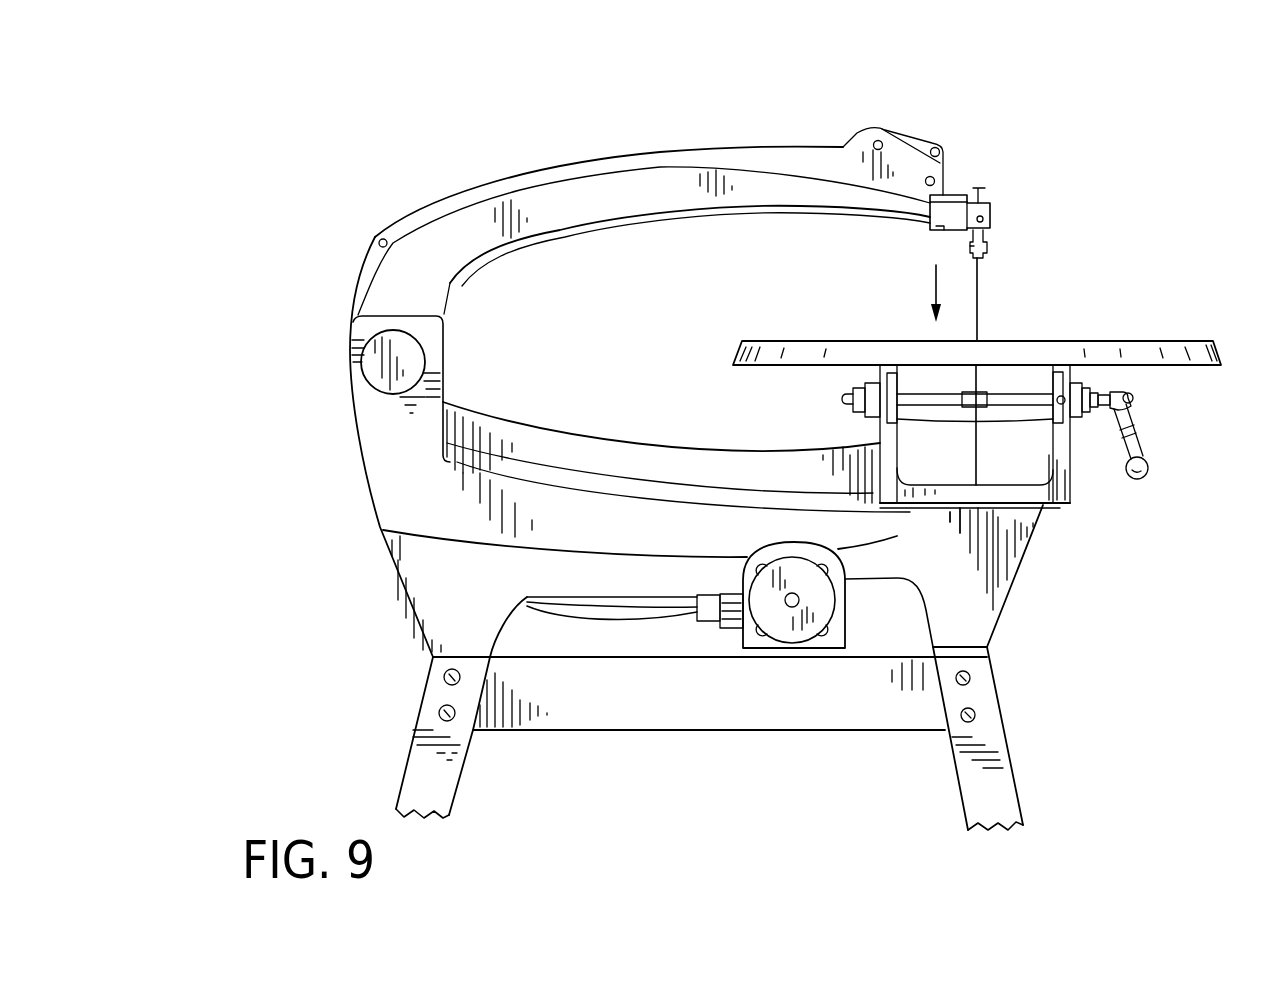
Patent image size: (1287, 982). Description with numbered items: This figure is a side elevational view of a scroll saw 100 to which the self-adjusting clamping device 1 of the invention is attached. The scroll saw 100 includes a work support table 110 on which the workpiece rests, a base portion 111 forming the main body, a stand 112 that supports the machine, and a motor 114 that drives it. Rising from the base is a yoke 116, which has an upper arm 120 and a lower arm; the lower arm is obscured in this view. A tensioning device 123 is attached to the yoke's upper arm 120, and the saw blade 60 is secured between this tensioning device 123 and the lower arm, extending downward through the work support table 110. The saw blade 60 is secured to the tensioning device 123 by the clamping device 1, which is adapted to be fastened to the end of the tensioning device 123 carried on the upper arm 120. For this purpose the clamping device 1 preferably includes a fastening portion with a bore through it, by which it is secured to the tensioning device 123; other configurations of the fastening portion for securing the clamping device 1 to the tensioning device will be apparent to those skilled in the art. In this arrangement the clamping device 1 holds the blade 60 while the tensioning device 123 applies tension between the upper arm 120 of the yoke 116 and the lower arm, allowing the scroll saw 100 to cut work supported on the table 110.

The scroll saw 100 is at (958, 106).
The clamping device 1 is at (988, 247).
The saw blade 60 is at (980, 305).
The work support table 110 is at (1170, 342).
The base portion 111 is at (372, 443).
The stand 112 is at (1007, 770).
The motor 114 is at (810, 633).
The yoke 116 is at (535, 202).
The upper arm 120 is at (760, 190).
The tensioning device 123 is at (990, 213).